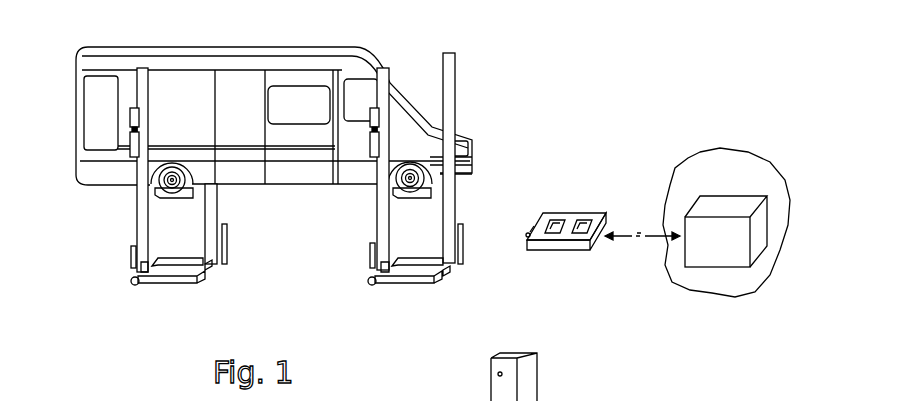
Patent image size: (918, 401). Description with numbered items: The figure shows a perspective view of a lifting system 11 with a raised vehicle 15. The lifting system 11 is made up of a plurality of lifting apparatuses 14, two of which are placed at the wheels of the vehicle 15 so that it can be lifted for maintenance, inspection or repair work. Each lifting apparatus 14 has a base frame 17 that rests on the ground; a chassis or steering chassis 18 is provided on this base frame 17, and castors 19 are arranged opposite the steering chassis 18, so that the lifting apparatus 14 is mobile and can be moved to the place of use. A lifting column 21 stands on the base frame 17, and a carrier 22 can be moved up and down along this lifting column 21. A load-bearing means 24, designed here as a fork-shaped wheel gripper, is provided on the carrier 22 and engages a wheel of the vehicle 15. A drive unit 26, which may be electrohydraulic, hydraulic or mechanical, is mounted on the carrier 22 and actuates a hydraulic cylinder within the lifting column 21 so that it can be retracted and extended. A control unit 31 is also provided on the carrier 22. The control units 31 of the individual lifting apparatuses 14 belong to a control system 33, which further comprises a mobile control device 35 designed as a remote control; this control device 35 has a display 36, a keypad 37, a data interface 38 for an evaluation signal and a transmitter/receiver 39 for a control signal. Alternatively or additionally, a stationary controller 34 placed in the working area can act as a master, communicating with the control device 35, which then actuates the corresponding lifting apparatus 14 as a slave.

The lifting system 11 is at (203, 297).
The lifting apparatus 14 is at (241, 272).
The vehicle 15 is at (298, 40).
The base frame 17 is at (364, 188).
The steering chassis 18 is at (124, 279).
The castors 19 is at (449, 282).
The lifting column 21 is at (126, 212).
The carrier 22 is at (379, 67).
The load-bearing means 24 is at (178, 197).
The drive unit 26 is at (131, 115).
The control unit 31 is at (131, 128).
The control system 33 is at (537, 279).
The stationary controller 34 is at (731, 256).
The control device 35 is at (573, 204).
The display 36 is at (550, 237).
The keypad 37 is at (582, 237).
The data interface 38 is at (528, 210).
The transmitter/receiver 39 is at (518, 240).